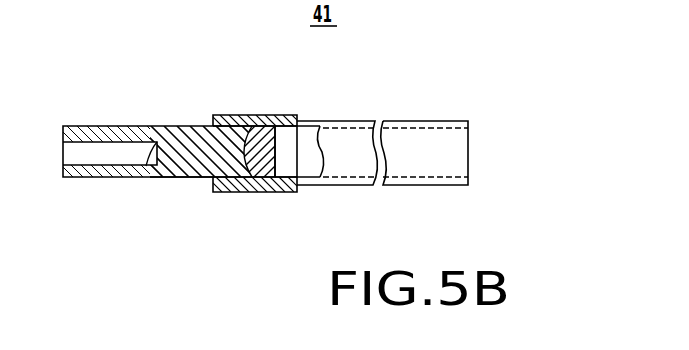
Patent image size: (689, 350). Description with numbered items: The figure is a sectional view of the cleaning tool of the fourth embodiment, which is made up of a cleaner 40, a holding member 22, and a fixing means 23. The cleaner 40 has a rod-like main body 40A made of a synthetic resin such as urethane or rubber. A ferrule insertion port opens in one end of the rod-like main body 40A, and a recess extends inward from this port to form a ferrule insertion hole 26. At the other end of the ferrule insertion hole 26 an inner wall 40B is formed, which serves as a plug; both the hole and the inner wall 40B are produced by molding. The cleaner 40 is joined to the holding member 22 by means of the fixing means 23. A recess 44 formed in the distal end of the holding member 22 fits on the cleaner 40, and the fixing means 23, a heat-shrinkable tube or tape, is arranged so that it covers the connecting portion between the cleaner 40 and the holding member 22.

The ferrule insertion hole 26 is at (97, 148).
The cleaner 40 is at (173, 118).
The rod-like main body 40A is at (178, 178).
The inner wall 40B is at (147, 177).
The fixing means 23 is at (256, 115).
The recess 44 is at (243, 192).
The holding member 22 is at (352, 185).